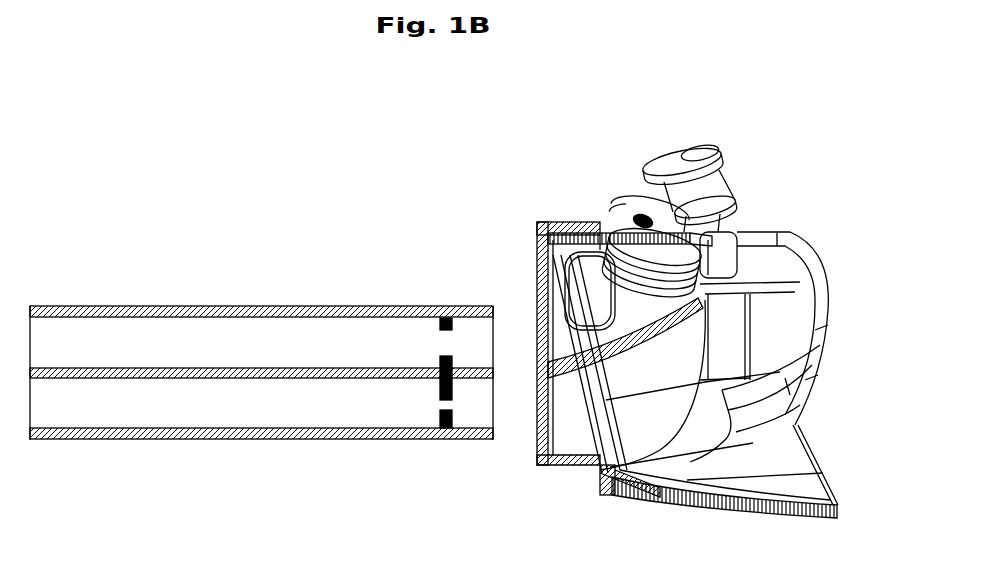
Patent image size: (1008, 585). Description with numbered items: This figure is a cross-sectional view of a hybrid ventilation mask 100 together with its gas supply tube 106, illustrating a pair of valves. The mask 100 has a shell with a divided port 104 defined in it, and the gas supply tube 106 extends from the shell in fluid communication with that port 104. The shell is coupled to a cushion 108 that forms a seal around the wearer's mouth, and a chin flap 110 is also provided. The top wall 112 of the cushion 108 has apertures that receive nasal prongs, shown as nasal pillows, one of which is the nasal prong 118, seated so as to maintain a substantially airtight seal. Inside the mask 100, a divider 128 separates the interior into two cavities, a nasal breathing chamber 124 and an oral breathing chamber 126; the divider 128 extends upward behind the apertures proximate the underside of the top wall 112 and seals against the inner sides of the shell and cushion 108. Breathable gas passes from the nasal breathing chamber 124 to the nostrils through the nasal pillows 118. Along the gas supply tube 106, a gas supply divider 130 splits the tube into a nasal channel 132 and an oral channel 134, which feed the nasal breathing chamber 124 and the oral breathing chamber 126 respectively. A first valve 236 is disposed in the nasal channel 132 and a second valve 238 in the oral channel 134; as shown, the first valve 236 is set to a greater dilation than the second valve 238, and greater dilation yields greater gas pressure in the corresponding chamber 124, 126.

The mask 100 is at (674, 293).
The port 104 is at (545, 312).
The gas supply tube 106 is at (261, 304).
The cushion 108 is at (803, 258).
The chin flap 110 is at (760, 497).
The top wall 112 is at (600, 232).
The nasal prong 118 is at (682, 170).
The nasal breathing chamber 124 is at (655, 320).
The oral breathing chamber 126 is at (657, 417).
The divider 128 is at (583, 362).
The gas supply divider 130 is at (175, 378).
The nasal channel 132 is at (322, 361).
The oral channel 134 is at (322, 424).
The first valve 236 is at (445, 322).
The second valve 238 is at (445, 418).